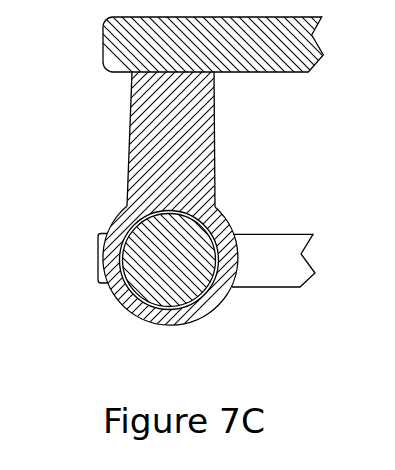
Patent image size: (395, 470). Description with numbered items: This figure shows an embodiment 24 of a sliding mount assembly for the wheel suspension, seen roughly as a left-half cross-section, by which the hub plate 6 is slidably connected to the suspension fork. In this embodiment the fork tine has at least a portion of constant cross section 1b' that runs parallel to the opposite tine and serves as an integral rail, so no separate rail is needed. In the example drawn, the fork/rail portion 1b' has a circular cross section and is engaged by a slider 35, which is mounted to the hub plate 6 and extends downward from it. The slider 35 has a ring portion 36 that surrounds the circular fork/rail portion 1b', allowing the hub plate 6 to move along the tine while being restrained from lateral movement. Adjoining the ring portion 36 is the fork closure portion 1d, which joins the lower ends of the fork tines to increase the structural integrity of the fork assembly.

The hub plate 6 is at (168, 57).
The sliding mount assembly embodiment 24 is at (197, 220).
The slider 35 is at (215, 172).
The ring portion 36 is at (223, 305).
The constant cross section portion of fork tine 1b' is at (166, 250).
The fork closure portion 1d is at (250, 272).